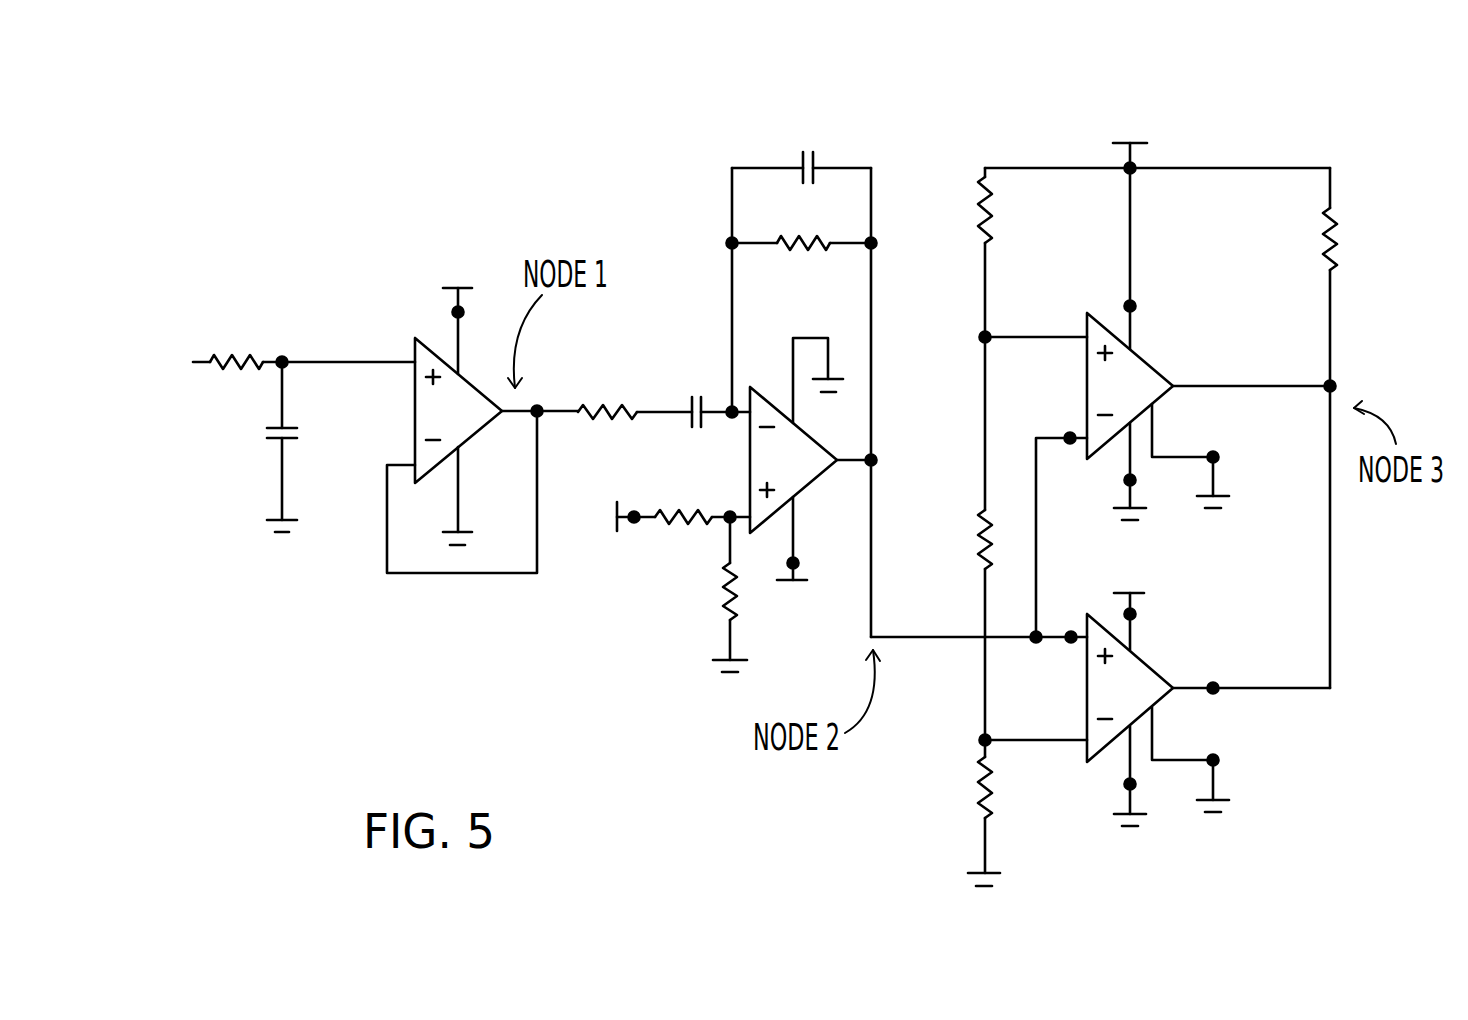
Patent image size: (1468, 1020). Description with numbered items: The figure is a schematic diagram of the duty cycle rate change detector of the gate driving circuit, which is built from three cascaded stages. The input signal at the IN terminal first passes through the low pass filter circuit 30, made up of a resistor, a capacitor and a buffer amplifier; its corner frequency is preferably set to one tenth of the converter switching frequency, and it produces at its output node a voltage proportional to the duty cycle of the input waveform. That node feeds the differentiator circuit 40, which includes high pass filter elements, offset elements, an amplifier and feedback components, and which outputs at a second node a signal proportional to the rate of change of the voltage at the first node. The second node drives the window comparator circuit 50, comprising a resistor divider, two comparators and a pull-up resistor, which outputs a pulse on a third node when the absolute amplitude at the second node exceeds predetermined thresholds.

The low pass filter circuit 30 is at (393, 297).
The differentiator circuit 40 is at (670, 255).
The window comparator circuit 50 is at (1237, 154).